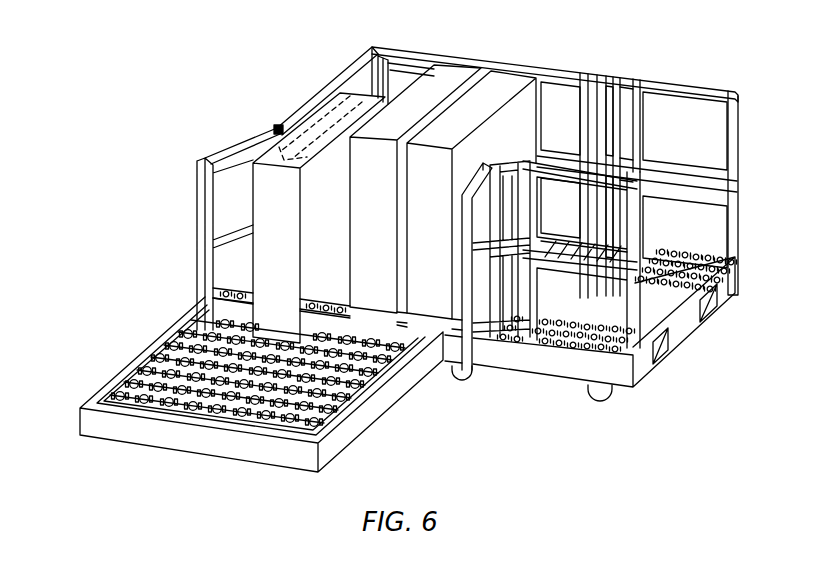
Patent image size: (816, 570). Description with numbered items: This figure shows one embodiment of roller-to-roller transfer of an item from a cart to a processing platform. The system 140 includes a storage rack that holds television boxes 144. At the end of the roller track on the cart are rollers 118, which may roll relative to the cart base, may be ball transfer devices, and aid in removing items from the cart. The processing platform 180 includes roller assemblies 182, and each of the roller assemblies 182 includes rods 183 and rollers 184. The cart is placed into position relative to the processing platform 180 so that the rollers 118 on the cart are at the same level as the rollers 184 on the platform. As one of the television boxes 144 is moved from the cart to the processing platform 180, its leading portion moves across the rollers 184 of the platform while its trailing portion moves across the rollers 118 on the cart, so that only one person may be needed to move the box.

The system 140 is at (250, 75).
The television boxes 144 is at (349, 233).
The rollers 118 is at (393, 312).
The processing platform 180 is at (207, 447).
The roller assemblies 182 is at (129, 365).
The rods 183 is at (163, 357).
The rollers 184 is at (200, 330).